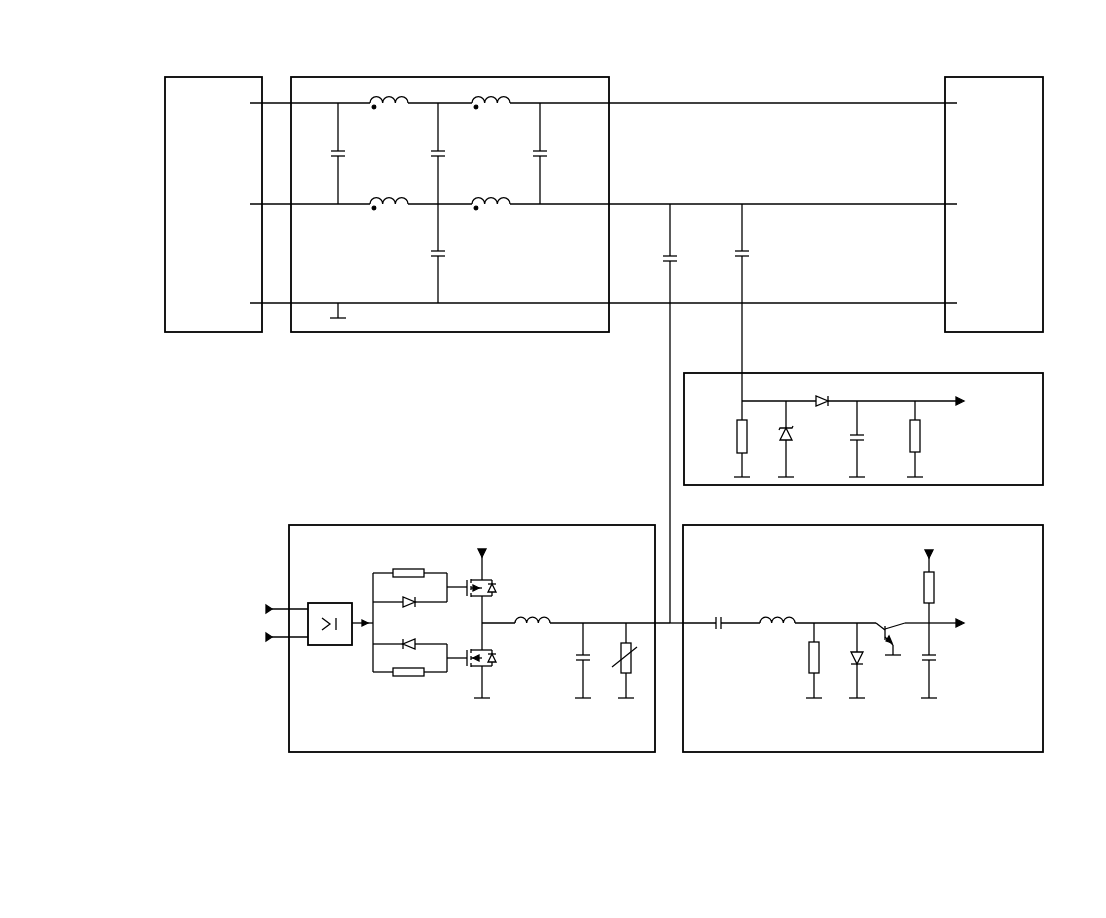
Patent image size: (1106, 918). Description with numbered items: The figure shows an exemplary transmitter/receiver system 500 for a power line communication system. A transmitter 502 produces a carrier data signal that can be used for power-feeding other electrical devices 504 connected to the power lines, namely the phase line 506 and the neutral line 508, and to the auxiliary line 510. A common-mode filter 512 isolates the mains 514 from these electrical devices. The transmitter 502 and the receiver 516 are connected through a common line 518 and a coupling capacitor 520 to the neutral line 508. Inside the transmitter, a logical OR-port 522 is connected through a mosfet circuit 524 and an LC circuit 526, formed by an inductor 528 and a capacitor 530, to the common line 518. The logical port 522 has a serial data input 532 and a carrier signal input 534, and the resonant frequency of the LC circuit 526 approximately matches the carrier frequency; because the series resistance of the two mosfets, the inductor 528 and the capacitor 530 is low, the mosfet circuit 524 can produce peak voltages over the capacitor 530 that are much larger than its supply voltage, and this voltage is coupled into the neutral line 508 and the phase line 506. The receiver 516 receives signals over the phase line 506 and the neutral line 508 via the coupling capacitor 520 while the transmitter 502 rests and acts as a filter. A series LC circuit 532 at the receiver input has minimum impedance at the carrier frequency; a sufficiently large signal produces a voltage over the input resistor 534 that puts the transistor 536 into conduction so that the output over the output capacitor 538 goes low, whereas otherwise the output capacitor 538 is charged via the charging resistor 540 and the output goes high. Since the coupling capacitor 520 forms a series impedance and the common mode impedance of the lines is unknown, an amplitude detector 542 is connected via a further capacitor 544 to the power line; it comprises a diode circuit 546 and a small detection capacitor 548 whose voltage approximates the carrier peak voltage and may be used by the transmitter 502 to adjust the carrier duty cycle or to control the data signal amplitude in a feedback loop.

The transmitter/receiver system 500 is at (688, 822).
The transmitter 502 is at (514, 652).
The electrical devices 504 is at (1043, 288).
The phase line 506 is at (853, 103).
The neutral line 508 is at (853, 204).
The auxiliary line 510 is at (853, 303).
The common-mode filter 512 is at (353, 332).
The mains 514 is at (222, 332).
The receiver 516 is at (856, 653).
The common line 518 is at (668, 337).
The capacitor C5 520 is at (679, 225).
The logical OR-port U1 522 is at (325, 645).
The mosfet circuit 524 is at (434, 688).
The LC circuit 526 is at (543, 688).
The inductor L4 528 is at (525, 603).
The capacitor C7 530 is at (584, 647).
The serial data (Tx data) input 532 is at (740, 598).
The carrier signal input 534 is at (794, 682).
The transistor T3 536 is at (890, 597).
The output capacitor C9 538 is at (960, 653).
The resistor R5 540 is at (960, 585).
The amplitude detector 542 is at (889, 437).
The capacitor C6 544 is at (750, 225).
The diode circuit 546 is at (806, 439).
The detection capacitor 548 is at (867, 462).